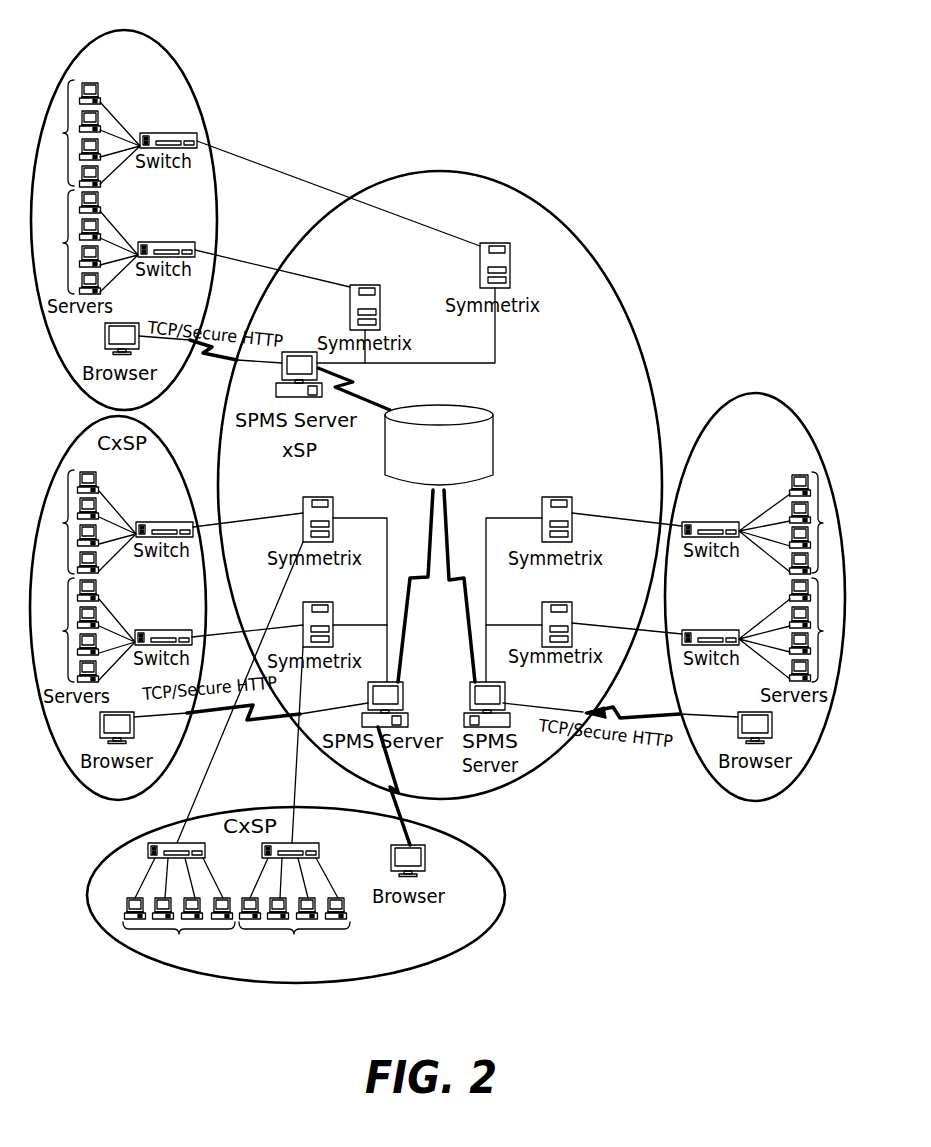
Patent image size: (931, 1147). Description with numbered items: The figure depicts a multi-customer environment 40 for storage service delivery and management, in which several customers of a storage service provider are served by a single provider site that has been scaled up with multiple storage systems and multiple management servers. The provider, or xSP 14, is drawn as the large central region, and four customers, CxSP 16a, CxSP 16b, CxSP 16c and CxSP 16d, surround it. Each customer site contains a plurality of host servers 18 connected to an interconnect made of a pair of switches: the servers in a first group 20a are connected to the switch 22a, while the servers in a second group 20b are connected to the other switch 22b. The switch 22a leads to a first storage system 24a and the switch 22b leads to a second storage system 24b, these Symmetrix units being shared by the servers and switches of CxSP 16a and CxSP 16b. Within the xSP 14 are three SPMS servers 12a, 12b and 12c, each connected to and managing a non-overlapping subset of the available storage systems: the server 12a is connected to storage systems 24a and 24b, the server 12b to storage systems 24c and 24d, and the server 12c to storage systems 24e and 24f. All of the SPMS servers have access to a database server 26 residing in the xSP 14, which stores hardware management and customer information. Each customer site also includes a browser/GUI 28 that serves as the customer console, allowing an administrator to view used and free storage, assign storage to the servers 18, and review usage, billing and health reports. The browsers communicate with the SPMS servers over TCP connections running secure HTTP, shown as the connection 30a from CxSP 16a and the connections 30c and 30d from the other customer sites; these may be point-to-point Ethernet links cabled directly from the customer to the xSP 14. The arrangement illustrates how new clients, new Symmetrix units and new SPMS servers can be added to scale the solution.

The multi-customer environment 40 is at (584, 155).
The xSP 14 is at (598, 251).
The CxSP 16a is at (58, 456).
The CxSP 16b is at (509, 891).
The CxSP 16c is at (809, 414).
The CxSP 16d is at (189, 82).
The host server 18 is at (98, 84).
The first group of servers 20a is at (443, 519).
The second group of servers 20b is at (442, 574).
The switch 22a is at (172, 133).
The switch 22b is at (171, 242).
The first storage system 24a is at (313, 497).
The second storage system 24b is at (313, 602).
The storage system 24c is at (560, 497).
The storage system 24d is at (552, 602).
The storage system 24e is at (367, 285).
The storage system 24f is at (480, 257).
The SPMS server 12a is at (403, 694).
The SPMS server 12b is at (503, 692).
The SPMS server 12c is at (297, 352).
The database server 26 is at (455, 410).
The browser/GUI 28 is at (105, 337).
The TCP connection 30a is at (203, 717).
The TCP connection 30c is at (646, 709).
The TCP connection 30d is at (205, 359).